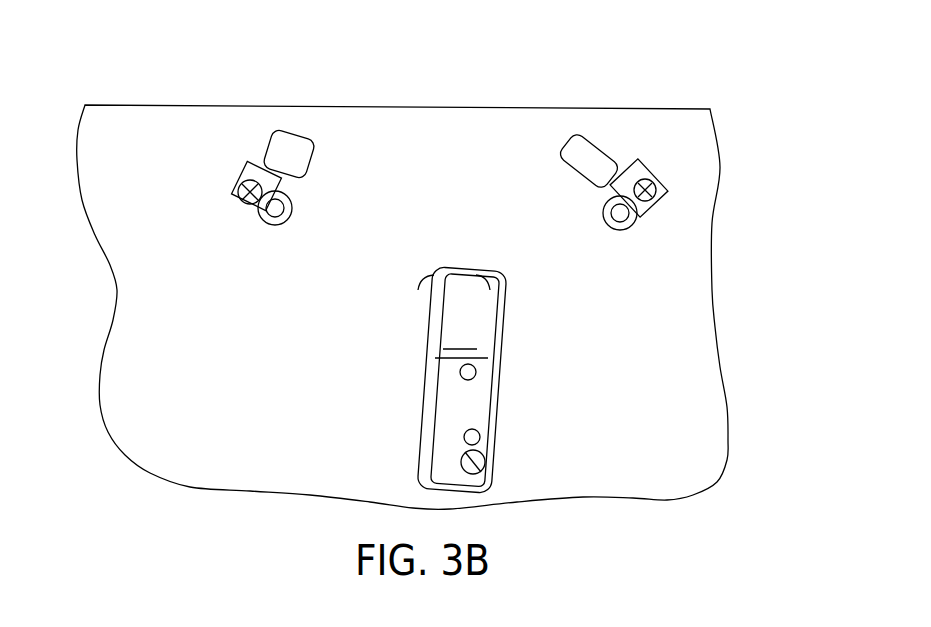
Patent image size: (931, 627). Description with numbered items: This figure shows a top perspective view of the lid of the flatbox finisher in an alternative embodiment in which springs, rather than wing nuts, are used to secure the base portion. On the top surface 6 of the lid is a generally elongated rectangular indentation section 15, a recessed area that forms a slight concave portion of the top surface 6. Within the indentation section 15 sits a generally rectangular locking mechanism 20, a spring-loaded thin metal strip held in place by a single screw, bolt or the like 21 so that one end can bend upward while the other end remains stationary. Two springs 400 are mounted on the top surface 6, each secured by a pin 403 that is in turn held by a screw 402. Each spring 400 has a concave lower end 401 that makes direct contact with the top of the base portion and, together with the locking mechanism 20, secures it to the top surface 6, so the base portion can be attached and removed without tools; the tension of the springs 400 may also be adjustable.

The top surface 6 is at (677, 330).
The generally elongated rectangular indentation section 15 is at (433, 400).
The generally rectangular locking mechanism 20 is at (467, 322).
The screw, bolt or the like 21 is at (483, 458).
The springs 400 is at (643, 163).
The concave lower end 401 is at (590, 157).
The screw 402 is at (648, 194).
The pin 403 is at (629, 222).